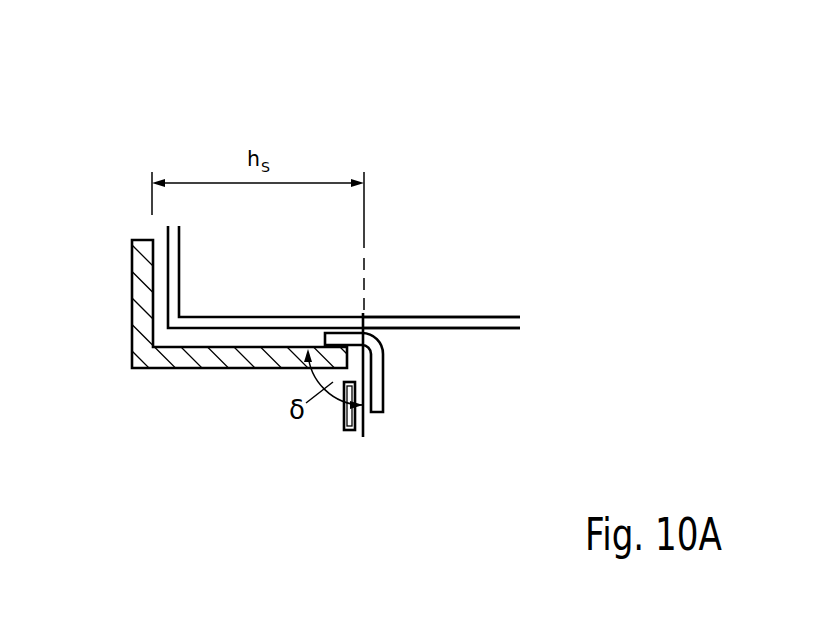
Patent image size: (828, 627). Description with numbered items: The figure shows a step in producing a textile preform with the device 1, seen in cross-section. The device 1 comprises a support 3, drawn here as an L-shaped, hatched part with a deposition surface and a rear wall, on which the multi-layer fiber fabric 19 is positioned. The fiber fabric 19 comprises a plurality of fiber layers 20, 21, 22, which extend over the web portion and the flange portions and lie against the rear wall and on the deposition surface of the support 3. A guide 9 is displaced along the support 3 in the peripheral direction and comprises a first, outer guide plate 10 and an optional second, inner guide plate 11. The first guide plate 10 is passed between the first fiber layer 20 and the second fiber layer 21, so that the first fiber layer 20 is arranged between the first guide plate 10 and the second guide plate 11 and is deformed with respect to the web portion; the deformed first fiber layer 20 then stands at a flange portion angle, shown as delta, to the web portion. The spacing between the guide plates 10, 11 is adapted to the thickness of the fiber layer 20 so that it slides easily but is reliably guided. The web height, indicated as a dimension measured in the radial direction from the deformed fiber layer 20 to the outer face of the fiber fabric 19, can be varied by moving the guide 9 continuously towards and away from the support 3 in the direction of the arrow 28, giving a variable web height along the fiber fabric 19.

The device 1 is at (148, 124).
The support 3 is at (141, 278).
The guide 9 is at (254, 427).
The first guide plate 10 is at (384, 391).
The second guide plate 11 is at (340, 421).
The fiber fabric 19 is at (246, 305).
The first fiber layer 20 is at (367, 428).
The second fiber layer 21 is at (505, 329).
The third fiber layer 22 is at (503, 316).
The arrow 28 is at (406, 460).